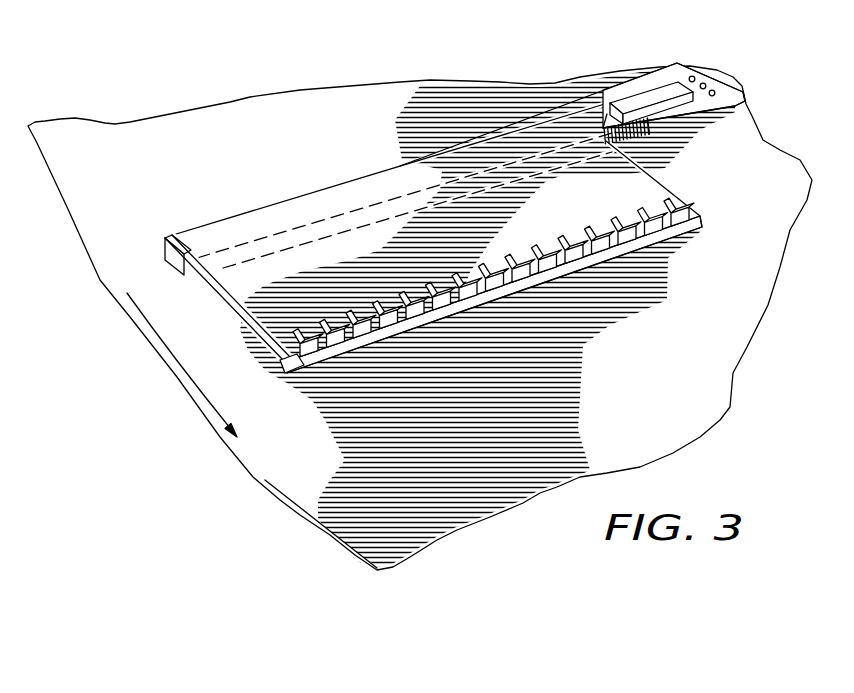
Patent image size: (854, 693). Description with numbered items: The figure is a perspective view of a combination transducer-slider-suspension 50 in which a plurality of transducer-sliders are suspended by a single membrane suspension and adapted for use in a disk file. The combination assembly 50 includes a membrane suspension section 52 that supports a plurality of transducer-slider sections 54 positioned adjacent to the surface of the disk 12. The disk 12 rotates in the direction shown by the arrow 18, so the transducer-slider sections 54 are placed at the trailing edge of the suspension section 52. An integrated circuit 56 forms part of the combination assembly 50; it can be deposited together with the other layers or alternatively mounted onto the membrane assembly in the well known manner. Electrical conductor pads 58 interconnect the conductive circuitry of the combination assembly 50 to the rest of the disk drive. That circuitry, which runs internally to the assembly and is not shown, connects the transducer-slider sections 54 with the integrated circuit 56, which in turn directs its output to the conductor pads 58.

The disk 12 is at (530, 399).
The arrow 18 is at (190, 383).
The combination transducer-slider-suspension 50 is at (548, 232).
The membrane suspension section 52 is at (245, 296).
The transducer-slider sections 54 is at (318, 357).
The integrated circuit 56 is at (642, 98).
The electrical conductor pads 58 is at (703, 83).